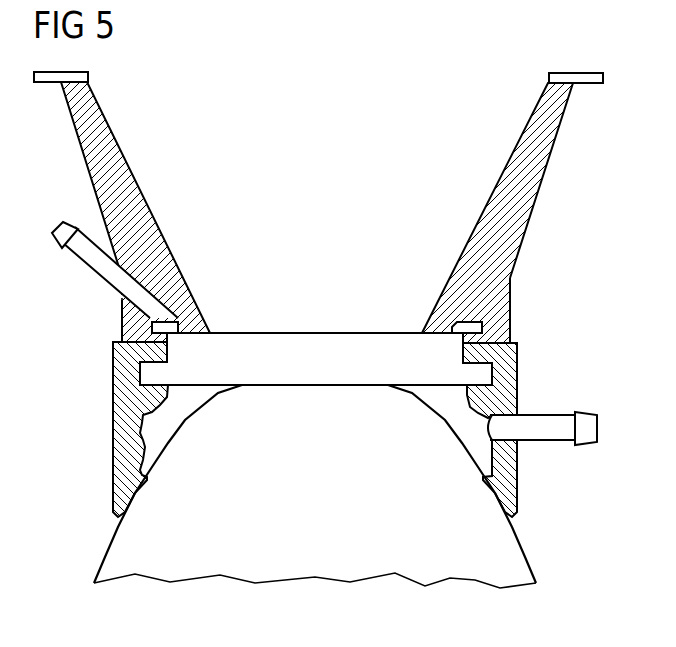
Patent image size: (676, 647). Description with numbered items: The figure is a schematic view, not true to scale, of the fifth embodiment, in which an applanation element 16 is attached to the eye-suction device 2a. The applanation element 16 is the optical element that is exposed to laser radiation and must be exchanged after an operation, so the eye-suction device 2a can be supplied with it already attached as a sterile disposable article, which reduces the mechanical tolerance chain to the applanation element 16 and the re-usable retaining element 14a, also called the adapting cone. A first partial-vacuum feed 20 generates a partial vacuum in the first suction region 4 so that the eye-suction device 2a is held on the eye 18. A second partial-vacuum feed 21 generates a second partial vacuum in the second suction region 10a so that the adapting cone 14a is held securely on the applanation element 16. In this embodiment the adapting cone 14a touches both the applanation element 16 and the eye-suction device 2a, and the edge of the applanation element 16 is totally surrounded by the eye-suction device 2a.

The retaining element 14a is at (522, 232).
The second suction region 10a is at (482, 327).
The applanation element 16 is at (482, 375).
The first partial-vacuum feed 20 is at (553, 425).
The eye-suction device 2a is at (510, 480).
The eye 18 is at (512, 552).
The first suction region 4 is at (438, 406).
The second partial-vacuum feed 21 is at (100, 265).